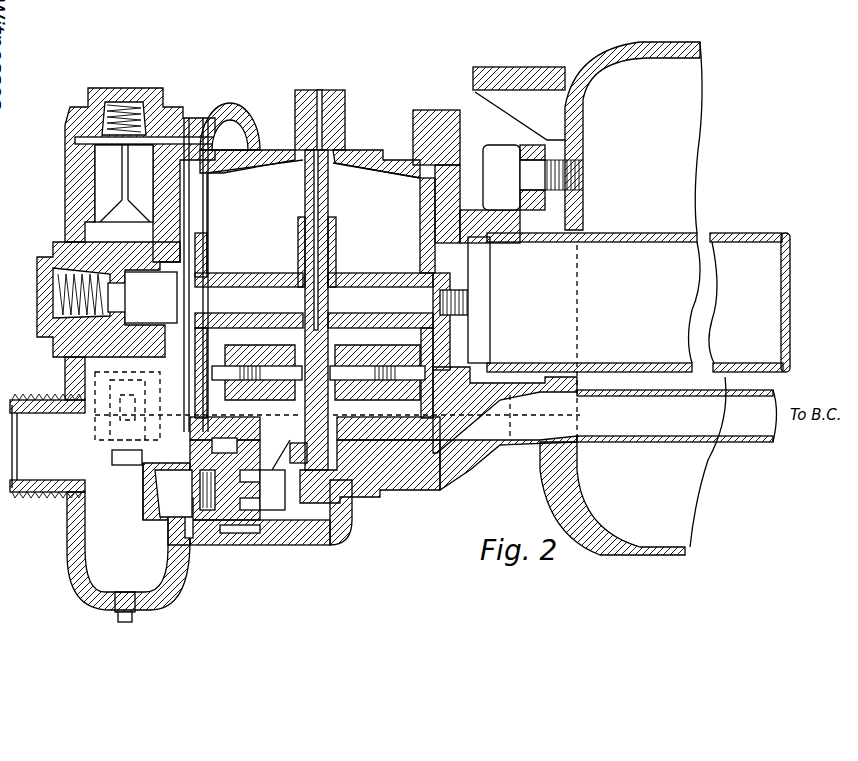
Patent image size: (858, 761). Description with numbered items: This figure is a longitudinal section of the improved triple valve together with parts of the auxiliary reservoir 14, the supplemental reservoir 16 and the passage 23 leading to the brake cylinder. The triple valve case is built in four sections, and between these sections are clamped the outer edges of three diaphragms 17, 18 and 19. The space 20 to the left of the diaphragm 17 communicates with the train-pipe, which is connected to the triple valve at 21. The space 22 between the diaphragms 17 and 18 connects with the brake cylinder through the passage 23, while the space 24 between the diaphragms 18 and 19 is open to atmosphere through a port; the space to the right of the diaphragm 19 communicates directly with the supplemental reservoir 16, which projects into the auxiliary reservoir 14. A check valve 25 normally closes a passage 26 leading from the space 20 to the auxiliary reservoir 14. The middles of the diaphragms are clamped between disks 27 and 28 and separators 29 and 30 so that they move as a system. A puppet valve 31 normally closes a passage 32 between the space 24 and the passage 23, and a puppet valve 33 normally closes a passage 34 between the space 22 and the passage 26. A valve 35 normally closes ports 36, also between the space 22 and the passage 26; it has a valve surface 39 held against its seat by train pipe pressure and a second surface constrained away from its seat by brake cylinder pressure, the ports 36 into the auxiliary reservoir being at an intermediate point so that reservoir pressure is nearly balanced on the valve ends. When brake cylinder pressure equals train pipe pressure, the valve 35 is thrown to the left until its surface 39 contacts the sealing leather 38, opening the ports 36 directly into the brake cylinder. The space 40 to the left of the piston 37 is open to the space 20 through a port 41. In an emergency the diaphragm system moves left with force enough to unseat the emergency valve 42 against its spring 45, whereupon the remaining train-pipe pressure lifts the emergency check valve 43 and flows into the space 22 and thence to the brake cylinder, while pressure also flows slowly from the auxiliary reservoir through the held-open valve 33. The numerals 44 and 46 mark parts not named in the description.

The auxiliary reservoir 14 is at (593, 298).
The supplemental reservoir 16 is at (638, 302).
The diaphragm 17 is at (200, 203).
The diaphragm 18 is at (333, 157).
The diaphragm 19 is at (440, 173).
The space 20 is at (123, 462).
The train-pipe connection 21 is at (47, 446).
The space 22 is at (255, 216).
The passage 23 is at (605, 428).
The space 24 is at (393, 148).
The check valve 25 is at (123, 433).
The passage 26 is at (167, 427).
The disk 27 is at (183, 257).
The disk 28 is at (443, 262).
The separator 29 is at (249, 271).
The separator 30 is at (398, 273).
The puppet valve 31 is at (377, 355).
The passage 32 is at (365, 400).
The puppet valve 33 is at (268, 355).
The passage 34 is at (280, 388).
The valve 35 is at (263, 532).
The passage 36 is at (225, 479).
The piston 37 is at (202, 538).
The sealing leather 38 is at (185, 530).
The valve surface 39 is at (230, 533).
The space 40 is at (173, 493).
The port 41 is at (147, 497).
The emergency valve 42 is at (58, 258).
The emergency check valve 43 is at (102, 188).
The cover 44 is at (217, 143).
The spring 45 is at (60, 292).
The spring 46 is at (140, 118).